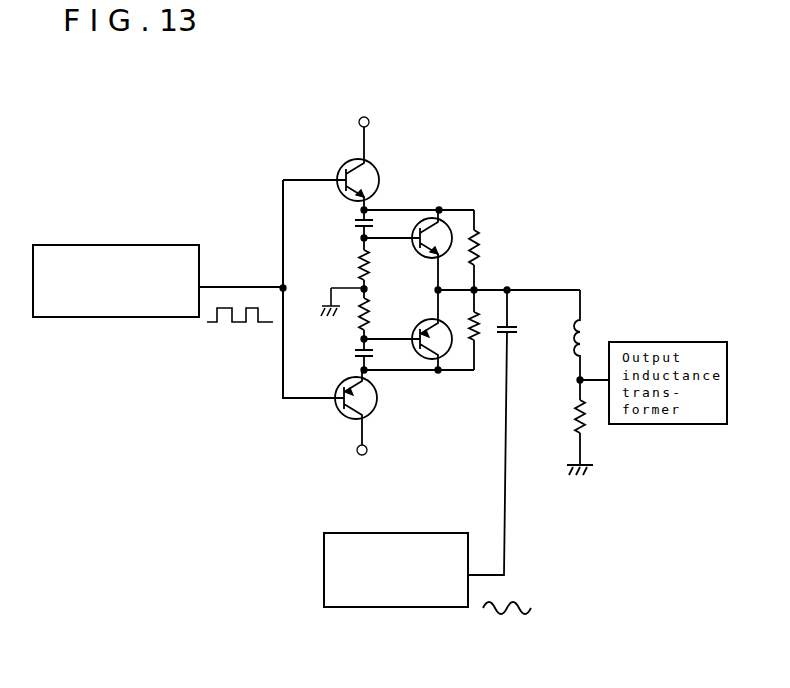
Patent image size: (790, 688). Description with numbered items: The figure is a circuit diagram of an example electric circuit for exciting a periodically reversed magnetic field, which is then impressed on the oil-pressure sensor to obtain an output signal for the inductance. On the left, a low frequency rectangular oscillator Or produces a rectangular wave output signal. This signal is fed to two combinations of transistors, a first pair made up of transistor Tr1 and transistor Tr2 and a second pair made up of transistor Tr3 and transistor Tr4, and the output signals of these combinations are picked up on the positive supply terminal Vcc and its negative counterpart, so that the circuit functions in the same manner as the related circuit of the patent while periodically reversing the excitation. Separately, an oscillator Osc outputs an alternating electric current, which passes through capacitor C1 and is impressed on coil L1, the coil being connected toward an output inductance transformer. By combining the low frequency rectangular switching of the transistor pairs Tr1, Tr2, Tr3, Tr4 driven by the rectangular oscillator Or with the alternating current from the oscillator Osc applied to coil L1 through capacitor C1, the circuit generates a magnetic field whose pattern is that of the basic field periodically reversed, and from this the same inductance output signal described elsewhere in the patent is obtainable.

The transistor Tr1 is at (353, 160).
The transistor Tr2 is at (414, 247).
The transistor Tr3 is at (341, 417).
The transistor Tr4 is at (429, 318).
The capacitor C1 is at (515, 326).
The coil L1 is at (575, 335).
The low frequency rectangular oscillator Or is at (116, 245).
The oscillator Osc is at (389, 533).
The +Vcc terminal Vcc is at (375, 101).